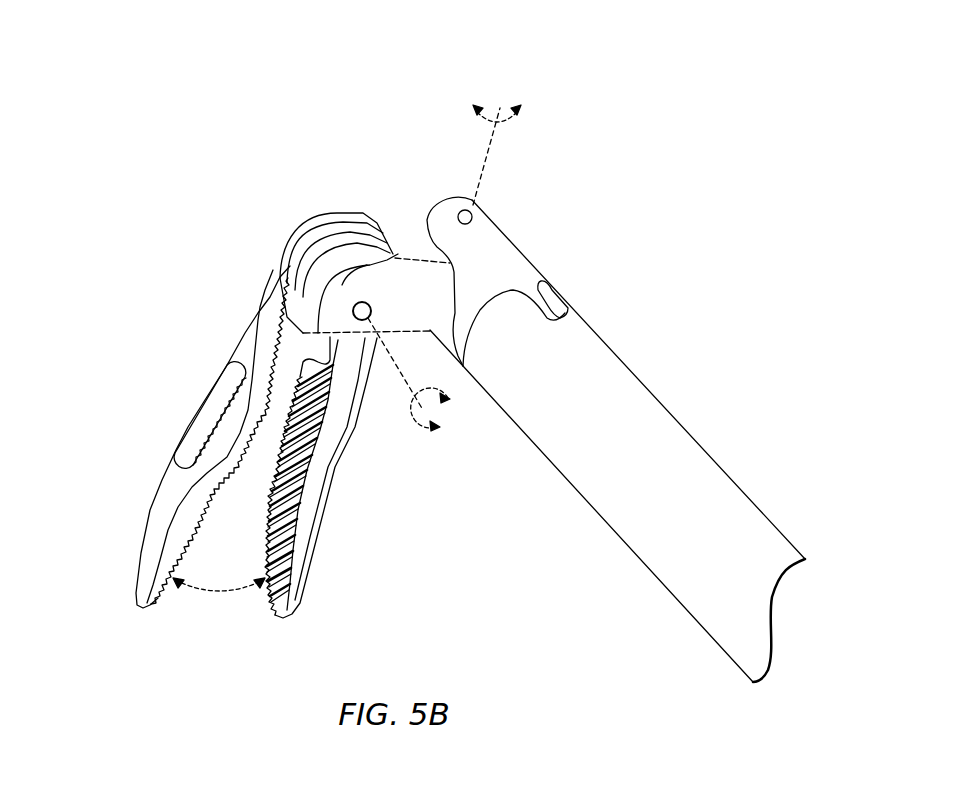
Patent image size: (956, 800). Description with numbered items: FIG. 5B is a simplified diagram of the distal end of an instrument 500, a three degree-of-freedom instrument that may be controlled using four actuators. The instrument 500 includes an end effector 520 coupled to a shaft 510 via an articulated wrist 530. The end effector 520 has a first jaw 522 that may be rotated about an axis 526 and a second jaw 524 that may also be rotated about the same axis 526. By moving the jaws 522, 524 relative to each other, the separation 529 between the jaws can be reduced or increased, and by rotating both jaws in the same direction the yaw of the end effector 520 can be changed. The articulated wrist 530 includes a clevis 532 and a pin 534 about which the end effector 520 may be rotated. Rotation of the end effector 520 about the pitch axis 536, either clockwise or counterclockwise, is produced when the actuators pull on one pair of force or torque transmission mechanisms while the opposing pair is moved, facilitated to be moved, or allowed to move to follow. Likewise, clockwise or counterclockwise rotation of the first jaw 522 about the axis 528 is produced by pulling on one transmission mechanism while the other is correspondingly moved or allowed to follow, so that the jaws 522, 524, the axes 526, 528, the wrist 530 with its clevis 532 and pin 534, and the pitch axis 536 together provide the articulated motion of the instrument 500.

The instrument 500 is at (752, 177).
The shaft 510 is at (723, 475).
The end effector 520 is at (63, 150).
The first jaw 522 is at (325, 483).
The second jaw 524 is at (158, 520).
The axis 526 is at (352, 307).
The axis 528 is at (413, 430).
The separation 529 is at (217, 593).
The articulated wrist 530 is at (582, 93).
The clevis 532 is at (524, 253).
The pin 534 is at (475, 210).
The pitch axis 536 is at (522, 124).